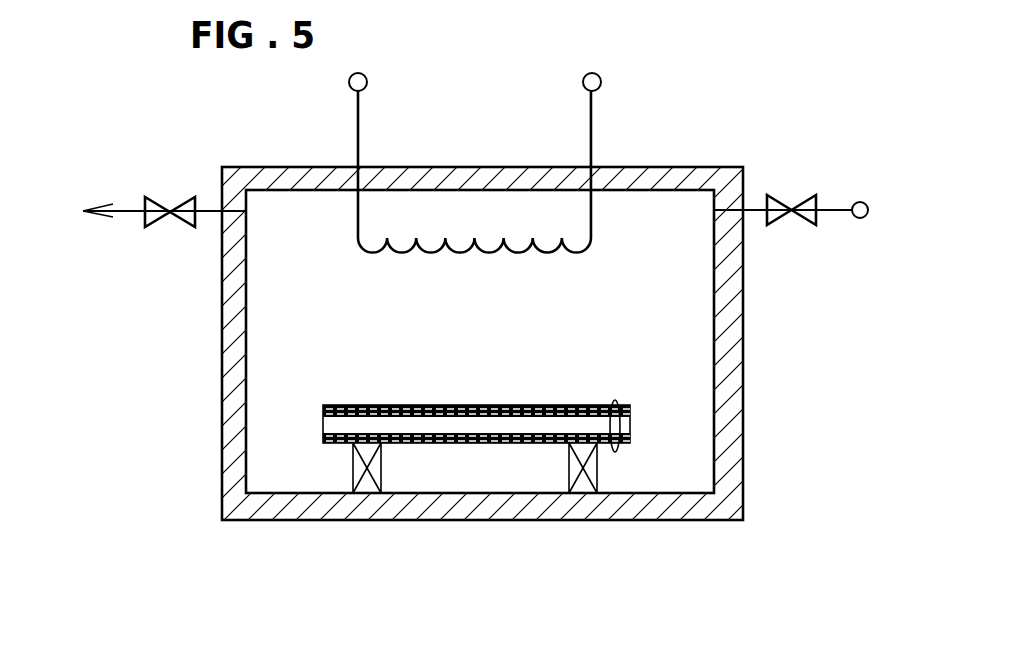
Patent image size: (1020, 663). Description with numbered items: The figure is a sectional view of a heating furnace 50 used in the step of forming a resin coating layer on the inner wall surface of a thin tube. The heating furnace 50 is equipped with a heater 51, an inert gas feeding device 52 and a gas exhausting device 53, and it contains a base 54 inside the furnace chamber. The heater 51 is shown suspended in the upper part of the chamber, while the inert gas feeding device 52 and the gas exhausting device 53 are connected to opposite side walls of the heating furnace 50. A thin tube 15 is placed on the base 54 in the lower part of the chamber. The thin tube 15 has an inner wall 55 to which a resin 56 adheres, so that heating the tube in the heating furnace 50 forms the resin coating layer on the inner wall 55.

The heating furnace 50 is at (690, 166).
The heater 51 is at (456, 247).
The inert gas feeding device 52 is at (783, 202).
The gas exhausting device 53 is at (157, 198).
The base 54 is at (578, 465).
The inner wall 55 is at (565, 380).
The resin 56 is at (521, 435).
The thin tube 15 is at (592, 400).